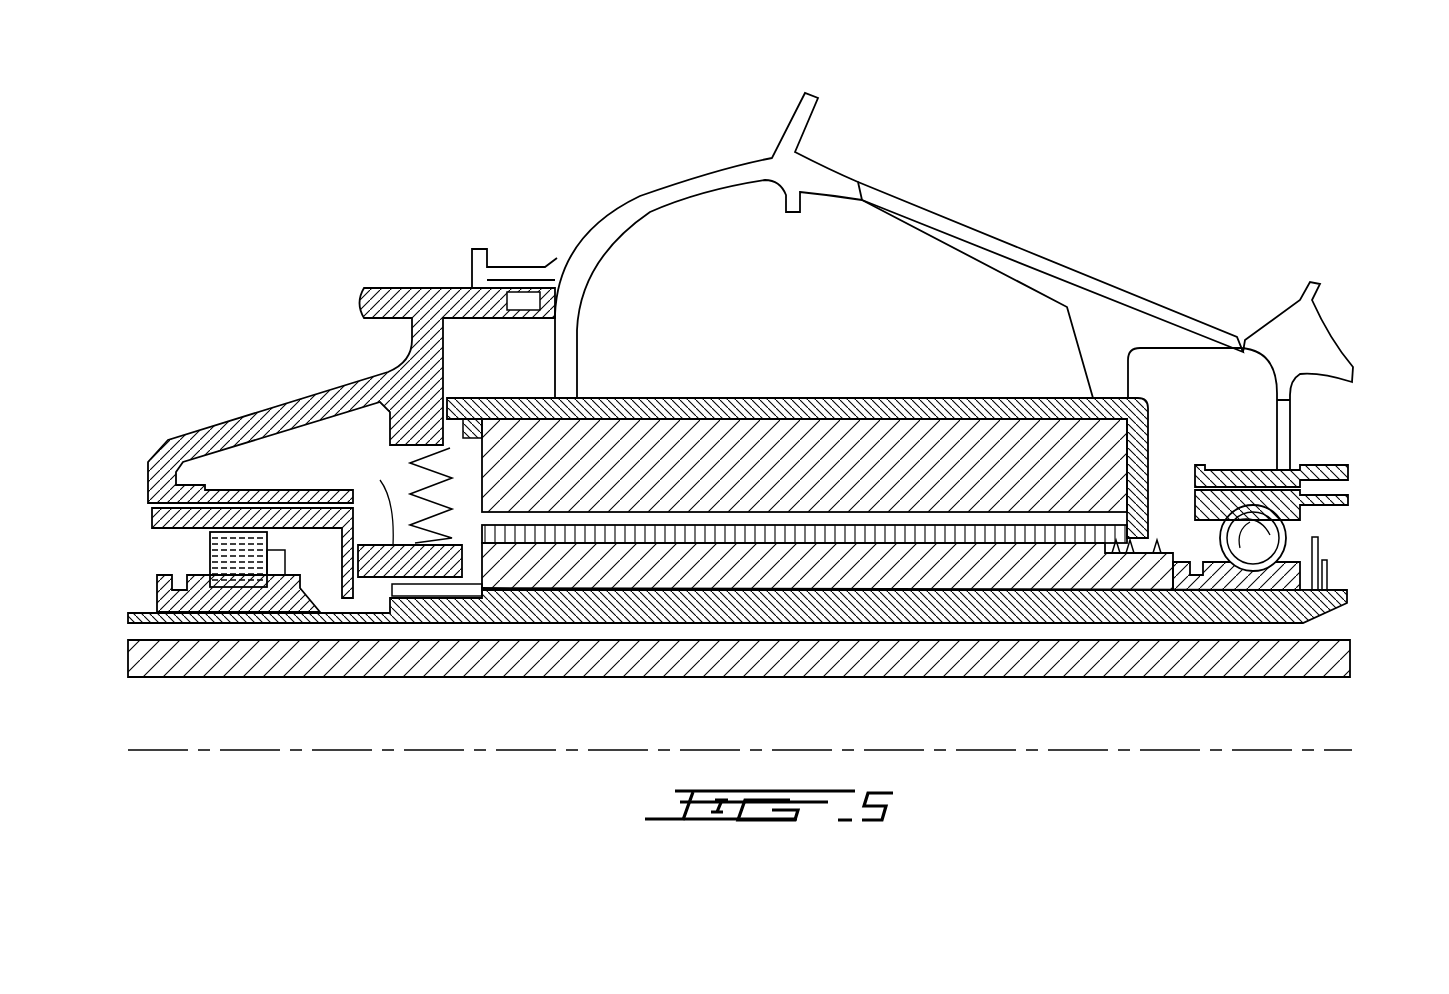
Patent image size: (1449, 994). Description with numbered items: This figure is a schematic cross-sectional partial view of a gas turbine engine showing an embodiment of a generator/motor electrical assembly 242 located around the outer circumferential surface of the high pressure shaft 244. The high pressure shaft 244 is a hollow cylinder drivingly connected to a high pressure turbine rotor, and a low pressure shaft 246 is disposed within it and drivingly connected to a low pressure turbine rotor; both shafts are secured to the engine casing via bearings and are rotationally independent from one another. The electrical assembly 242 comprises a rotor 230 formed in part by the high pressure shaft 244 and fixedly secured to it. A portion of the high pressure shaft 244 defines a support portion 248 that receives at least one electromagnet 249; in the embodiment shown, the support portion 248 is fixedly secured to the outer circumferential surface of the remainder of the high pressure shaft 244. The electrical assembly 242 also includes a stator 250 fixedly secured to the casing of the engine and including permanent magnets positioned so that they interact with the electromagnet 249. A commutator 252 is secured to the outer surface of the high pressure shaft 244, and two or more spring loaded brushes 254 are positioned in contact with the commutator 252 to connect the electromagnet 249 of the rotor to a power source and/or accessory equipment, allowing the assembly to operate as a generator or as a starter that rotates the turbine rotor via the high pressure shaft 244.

The generator/motor electrical assembly 242 is at (660, 258).
The stator 250 is at (842, 460).
The electromagnet 249 is at (1000, 540).
The support portion 248 is at (835, 567).
The rotor 230 is at (1162, 520).
The high pressure shaft 244 is at (1320, 598).
The low pressure shaft 246 is at (1115, 660).
The spring loaded brushes 254 is at (387, 488).
The commutator 252 is at (437, 590).